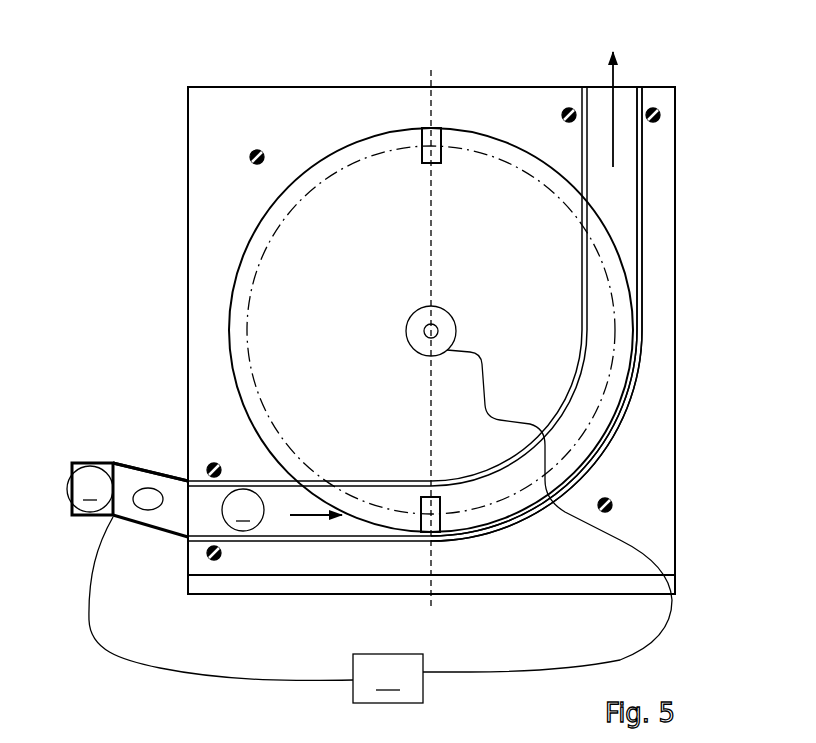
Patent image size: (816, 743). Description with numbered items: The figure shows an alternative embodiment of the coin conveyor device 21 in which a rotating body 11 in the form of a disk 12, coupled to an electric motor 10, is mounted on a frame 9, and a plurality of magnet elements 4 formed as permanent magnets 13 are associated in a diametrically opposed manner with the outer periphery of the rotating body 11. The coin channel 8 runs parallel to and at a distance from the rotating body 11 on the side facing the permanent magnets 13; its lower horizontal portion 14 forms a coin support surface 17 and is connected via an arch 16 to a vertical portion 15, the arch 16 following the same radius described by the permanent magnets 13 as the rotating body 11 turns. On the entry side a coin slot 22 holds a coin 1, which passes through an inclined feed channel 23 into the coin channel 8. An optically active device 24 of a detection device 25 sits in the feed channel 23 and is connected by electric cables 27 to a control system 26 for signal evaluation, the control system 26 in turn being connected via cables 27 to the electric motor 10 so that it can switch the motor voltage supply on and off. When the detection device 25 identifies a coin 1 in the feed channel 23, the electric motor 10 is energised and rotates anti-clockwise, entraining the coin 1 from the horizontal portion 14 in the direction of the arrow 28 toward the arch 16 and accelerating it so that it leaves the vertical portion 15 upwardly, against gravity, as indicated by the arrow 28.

The coin 1 is at (68, 460).
The magnet element 4 is at (446, 122).
The coin channel 8 is at (645, 245).
The frame 9 is at (185, 240).
The electric motor 10 is at (447, 312).
The rotating body 11 is at (280, 195).
The disk 12 is at (291, 354).
The permanent magnet 13 is at (422, 135).
The horizontal portion 14 is at (305, 540).
The vertical portion 15 is at (623, 118).
The arch 16 is at (617, 437).
The coin support surface 17 is at (247, 545).
The transport device 21 is at (163, 96).
The coin slot 22 is at (71, 452).
The inclined feed channel 23 is at (118, 466).
The optically active device 24 is at (147, 488).
The detection device 25 is at (158, 473).
The control system 26 is at (388, 678).
The electric cable 27 is at (102, 630).
The arrow 28 is at (310, 515).